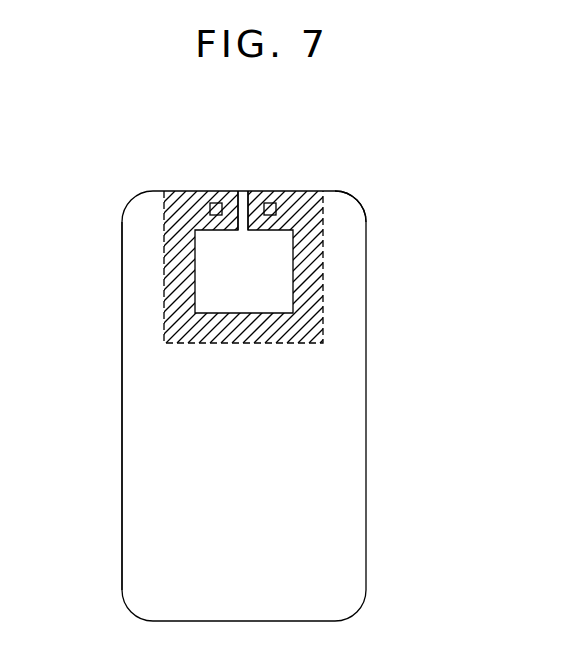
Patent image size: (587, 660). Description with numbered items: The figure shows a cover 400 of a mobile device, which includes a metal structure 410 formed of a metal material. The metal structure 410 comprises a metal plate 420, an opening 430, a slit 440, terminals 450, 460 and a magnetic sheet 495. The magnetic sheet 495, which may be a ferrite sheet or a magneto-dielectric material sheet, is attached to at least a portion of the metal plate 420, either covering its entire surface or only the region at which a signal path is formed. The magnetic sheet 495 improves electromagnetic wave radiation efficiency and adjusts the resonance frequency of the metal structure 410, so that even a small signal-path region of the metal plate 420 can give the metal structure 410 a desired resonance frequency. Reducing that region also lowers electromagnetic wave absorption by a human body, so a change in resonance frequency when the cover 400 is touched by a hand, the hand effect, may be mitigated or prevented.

The cover 400 is at (266, 114).
The metal structure 410 is at (362, 161).
The metal plate 420 is at (122, 270).
The opening 430 is at (265, 272).
The slit 440 is at (250, 202).
The terminal 450 is at (215, 203).
The terminal 460 is at (270, 203).
The magnetic sheet 495 is at (323, 238).